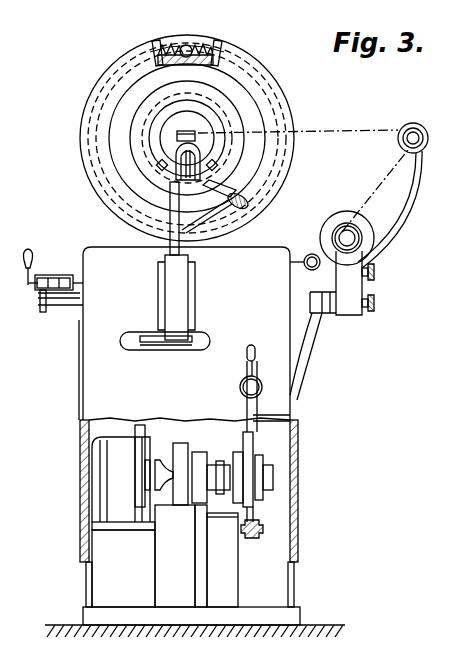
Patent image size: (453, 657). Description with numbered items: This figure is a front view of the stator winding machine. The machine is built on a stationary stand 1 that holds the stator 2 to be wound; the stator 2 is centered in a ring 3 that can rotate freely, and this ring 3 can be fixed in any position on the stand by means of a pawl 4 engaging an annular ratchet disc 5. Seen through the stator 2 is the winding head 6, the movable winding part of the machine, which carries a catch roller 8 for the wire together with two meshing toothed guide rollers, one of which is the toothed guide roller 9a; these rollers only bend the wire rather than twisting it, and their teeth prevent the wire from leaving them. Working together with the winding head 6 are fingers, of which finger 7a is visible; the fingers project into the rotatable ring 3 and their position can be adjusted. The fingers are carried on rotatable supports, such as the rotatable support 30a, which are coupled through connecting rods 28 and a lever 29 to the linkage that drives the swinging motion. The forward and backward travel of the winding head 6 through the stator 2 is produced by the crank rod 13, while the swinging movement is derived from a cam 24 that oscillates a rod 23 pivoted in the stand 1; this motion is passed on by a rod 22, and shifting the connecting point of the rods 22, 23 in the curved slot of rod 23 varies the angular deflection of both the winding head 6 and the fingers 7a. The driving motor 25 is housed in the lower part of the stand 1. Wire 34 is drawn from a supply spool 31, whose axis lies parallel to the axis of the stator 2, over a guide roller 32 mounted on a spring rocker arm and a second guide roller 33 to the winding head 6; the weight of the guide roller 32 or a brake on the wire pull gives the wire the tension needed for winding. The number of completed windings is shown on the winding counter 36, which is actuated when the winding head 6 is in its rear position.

The stationary stand 1 is at (95, 395).
The stator 2 is at (223, 100).
The ring 3 is at (160, 60).
The pawl 4 is at (181, 55).
The annular ratchet disc 5 is at (229, 56).
The winding head 6 is at (181, 167).
The finger 7a is at (235, 198).
The catch roller 8 is at (181, 158).
The toothed guide roller 9a is at (185, 178).
The crank rod 13 is at (262, 485).
The rod 22 is at (262, 388).
The rod 23 is at (256, 432).
The cam 24 is at (245, 440).
The driving motor 25 is at (118, 475).
The connecting rods 28 is at (205, 338).
The lever 29 is at (148, 337).
The rotatable support 30a is at (180, 280).
The supply spool 31 is at (368, 242).
The guide roller 32 is at (413, 124).
The guide roller 33 is at (178, 131).
The wire 34 is at (332, 130).
The winding counter 36 is at (60, 288).